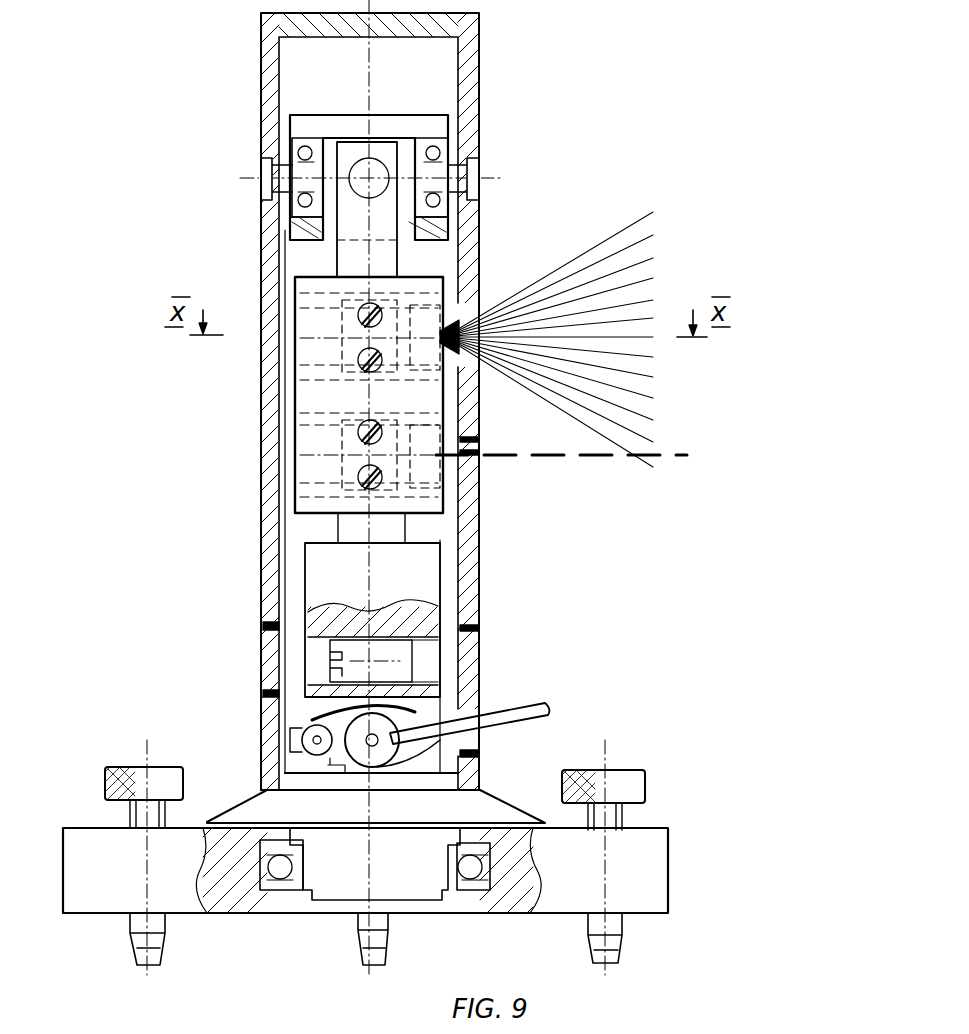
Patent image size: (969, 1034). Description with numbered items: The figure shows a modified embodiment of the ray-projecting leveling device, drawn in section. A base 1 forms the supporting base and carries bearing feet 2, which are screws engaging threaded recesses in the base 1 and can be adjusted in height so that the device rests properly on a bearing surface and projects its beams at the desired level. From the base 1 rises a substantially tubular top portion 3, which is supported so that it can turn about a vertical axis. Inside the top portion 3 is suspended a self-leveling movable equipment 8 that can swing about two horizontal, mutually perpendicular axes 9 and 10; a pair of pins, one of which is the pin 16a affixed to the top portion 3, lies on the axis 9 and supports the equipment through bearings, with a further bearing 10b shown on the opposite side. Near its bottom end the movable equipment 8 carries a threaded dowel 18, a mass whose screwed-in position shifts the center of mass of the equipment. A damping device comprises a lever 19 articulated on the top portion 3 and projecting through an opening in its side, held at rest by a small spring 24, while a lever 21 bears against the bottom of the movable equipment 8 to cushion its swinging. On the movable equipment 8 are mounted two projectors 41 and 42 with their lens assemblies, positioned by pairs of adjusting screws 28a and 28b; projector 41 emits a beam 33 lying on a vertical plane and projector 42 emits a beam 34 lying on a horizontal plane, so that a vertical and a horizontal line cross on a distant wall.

The base 1 is at (668, 860).
The bearing feet 2 is at (427, 927).
The top portion 3 is at (470, 97).
The self-leveling movable equipment 8 is at (463, 228).
The horizontal axis 9 is at (255, 177).
The horizontal axis 10 is at (372, 173).
The bearing 10b is at (275, 155).
The pin 16a is at (470, 160).
The dowel 18 is at (347, 650).
The lever 19 is at (530, 702).
The lever 21 is at (417, 685).
The small spring 24 is at (418, 790).
The adjusting screw 28a is at (362, 477).
The adjusting screw 28b is at (360, 432).
The beam 33 is at (643, 283).
The beam 34 is at (677, 453).
The projector 41 is at (410, 305).
The projector 42 is at (407, 473).